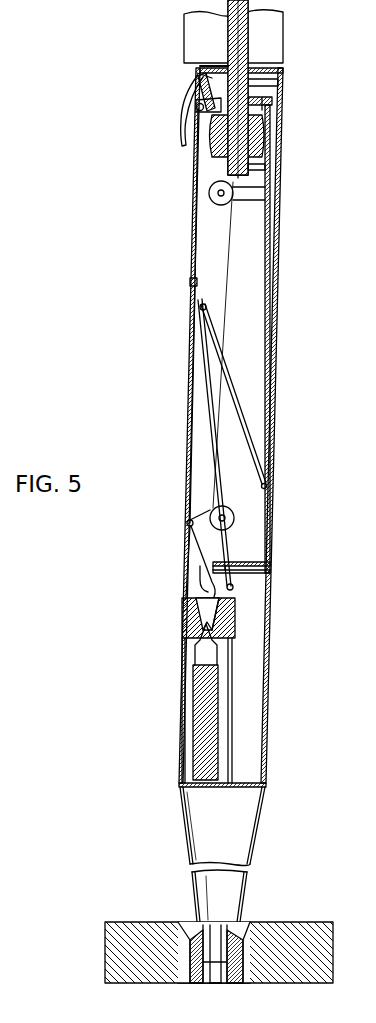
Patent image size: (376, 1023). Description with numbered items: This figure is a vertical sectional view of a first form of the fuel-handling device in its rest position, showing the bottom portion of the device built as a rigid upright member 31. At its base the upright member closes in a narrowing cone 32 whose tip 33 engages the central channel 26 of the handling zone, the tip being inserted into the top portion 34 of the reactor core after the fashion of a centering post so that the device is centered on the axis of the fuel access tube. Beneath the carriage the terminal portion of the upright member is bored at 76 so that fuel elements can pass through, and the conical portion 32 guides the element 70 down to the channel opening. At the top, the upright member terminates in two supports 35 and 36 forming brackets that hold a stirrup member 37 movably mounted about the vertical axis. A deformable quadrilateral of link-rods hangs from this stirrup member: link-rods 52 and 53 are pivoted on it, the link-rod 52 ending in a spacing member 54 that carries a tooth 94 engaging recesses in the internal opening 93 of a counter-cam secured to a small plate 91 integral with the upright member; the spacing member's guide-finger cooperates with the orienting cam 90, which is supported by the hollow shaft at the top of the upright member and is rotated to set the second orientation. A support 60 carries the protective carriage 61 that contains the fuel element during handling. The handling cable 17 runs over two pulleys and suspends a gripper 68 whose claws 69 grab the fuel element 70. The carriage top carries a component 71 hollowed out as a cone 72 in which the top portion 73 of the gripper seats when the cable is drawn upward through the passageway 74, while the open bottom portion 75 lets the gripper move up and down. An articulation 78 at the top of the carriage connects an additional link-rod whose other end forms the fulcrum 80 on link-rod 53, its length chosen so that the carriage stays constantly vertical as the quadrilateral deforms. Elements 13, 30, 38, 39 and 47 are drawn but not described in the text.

The shaft 13 is at (248, 48).
The handling cable 17 is at (229, 243).
The central channel 26 is at (217, 985).
The support block 30 is at (278, 36).
The upright member 31 is at (273, 383).
The cone 32 is at (262, 812).
The tip 33 is at (243, 920).
The top portion of the reactor core 34 is at (333, 950).
The support 35 is at (278, 82).
The support 36 is at (266, 575).
The stirrup member 37 is at (267, 298).
The collar 38 is at (272, 101).
The pulley 39 is at (221, 528).
The bar 47 is at (265, 167).
The link-rod 52 is at (205, 97).
The link-rod 53 is at (232, 378).
The spacing member 54 is at (197, 107).
The support 60 is at (193, 548).
The protective carriage 61 is at (230, 664).
The gripper 68 is at (218, 639).
The claws 69 is at (196, 668).
The fuel element 70 is at (212, 696).
The component 71 is at (183, 608).
The cone 72 is at (234, 619).
The top portion of the gripper 73 is at (197, 628).
The passageway 74 is at (198, 579).
The bottom portion of the carriage 75 is at (180, 779).
The bore 76 is at (200, 788).
The articulation 78 is at (233, 588).
The fulcrum 80 is at (198, 282).
The orienting cam 90 is at (234, 89).
The small plate 91 is at (200, 67).
The internal opening 93 is at (179, 130).
The tooth 94 is at (196, 80).